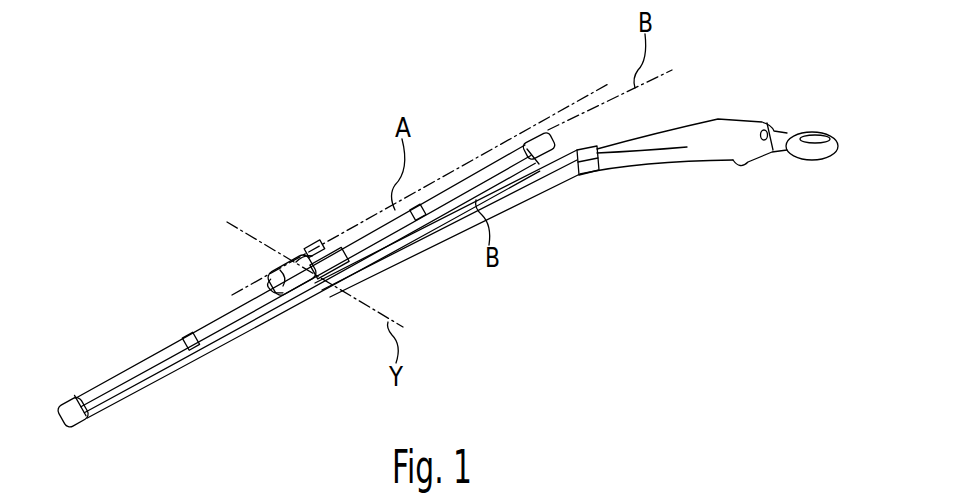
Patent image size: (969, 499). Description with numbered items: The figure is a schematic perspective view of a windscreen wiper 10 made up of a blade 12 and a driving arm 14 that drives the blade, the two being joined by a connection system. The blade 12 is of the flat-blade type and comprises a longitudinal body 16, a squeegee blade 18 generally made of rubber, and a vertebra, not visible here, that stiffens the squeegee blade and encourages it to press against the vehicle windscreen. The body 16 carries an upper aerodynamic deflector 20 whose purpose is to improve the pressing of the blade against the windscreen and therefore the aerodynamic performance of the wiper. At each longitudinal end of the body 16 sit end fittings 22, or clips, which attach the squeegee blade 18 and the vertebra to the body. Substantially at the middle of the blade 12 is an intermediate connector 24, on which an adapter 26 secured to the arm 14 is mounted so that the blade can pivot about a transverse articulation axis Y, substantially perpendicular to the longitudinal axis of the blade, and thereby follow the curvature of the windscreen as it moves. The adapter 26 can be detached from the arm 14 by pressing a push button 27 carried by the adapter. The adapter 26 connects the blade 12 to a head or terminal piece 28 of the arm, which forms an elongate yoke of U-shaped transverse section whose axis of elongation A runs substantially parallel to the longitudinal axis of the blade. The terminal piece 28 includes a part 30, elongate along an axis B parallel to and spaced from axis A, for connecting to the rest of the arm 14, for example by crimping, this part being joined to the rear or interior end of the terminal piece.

The windscreen wiper 10 is at (362, 115).
The blade 12 is at (308, 256).
The driving arm 14 is at (558, 186).
The longitudinal body 16 is at (158, 357).
The squeegee blade 18 is at (165, 372).
The upper aerodynamic deflector 20 is at (230, 318).
The end fittings 22 is at (64, 404).
The intermediate connector 24 is at (318, 282).
The adapter 26 is at (283, 297).
The push button 27 is at (318, 243).
The terminal piece 28 is at (303, 251).
The connecting part 30 is at (394, 241).